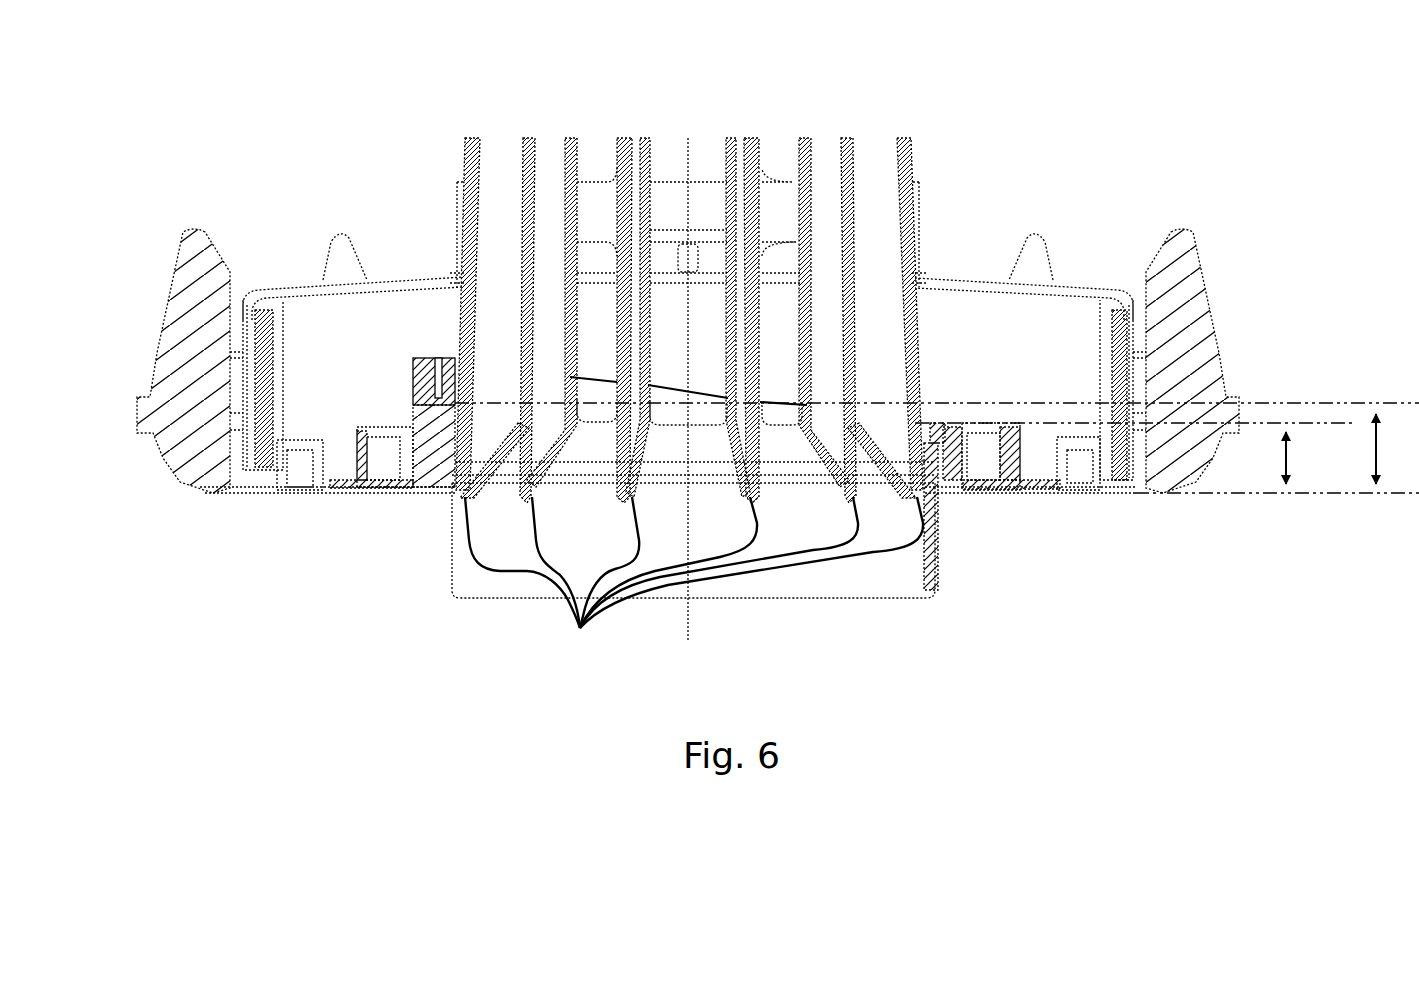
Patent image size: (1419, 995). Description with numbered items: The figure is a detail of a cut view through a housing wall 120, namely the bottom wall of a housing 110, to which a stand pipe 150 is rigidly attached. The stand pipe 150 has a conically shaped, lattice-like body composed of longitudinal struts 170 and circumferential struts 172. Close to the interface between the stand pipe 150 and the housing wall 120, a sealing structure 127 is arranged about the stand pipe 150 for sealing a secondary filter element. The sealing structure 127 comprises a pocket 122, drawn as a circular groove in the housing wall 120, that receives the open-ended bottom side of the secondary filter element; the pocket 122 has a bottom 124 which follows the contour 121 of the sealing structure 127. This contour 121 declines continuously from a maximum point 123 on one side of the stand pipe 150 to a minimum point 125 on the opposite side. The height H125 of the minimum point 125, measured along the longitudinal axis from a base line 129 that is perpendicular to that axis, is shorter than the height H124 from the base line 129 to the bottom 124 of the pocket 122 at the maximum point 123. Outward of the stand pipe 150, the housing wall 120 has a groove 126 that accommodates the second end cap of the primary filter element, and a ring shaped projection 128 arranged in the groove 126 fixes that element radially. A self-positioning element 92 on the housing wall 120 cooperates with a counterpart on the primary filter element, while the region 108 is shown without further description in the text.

The self-positioning element 92 is at (293, 293).
The stand pipe 150 is at (451, 155).
The sealing structure 127 is at (595, 376).
The circumferential struts 172 is at (920, 222).
The contour 121 is at (705, 395).
The maximum point 123 is at (423, 358).
The bottom 124 is at (413, 399).
The minimum point 125 is at (953, 426).
The ring shaped projection 128 is at (1023, 432).
The housing 110 is at (675, 415).
The housing wall 120 is at (190, 487).
The bottom region 108 is at (445, 584).
The longitudinal struts 170 is at (694, 588).
The pocket 122 is at (937, 460).
The groove 126 is at (1003, 495).
The base line 129 is at (1188, 495).
The height of the minimum point H125 is at (1285, 459).
The height of the pocket bottom at the maximum point H124 is at (1375, 459).